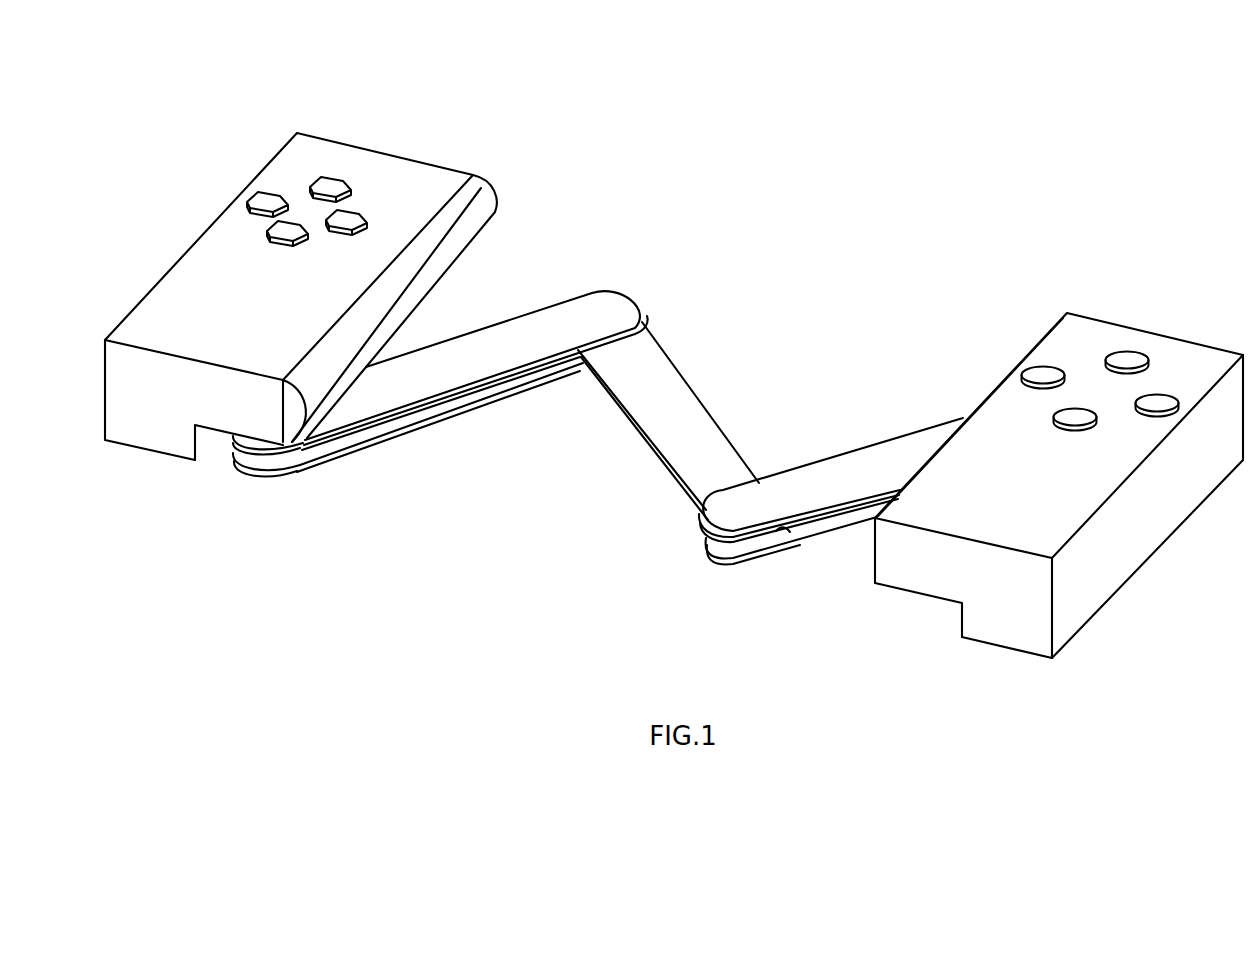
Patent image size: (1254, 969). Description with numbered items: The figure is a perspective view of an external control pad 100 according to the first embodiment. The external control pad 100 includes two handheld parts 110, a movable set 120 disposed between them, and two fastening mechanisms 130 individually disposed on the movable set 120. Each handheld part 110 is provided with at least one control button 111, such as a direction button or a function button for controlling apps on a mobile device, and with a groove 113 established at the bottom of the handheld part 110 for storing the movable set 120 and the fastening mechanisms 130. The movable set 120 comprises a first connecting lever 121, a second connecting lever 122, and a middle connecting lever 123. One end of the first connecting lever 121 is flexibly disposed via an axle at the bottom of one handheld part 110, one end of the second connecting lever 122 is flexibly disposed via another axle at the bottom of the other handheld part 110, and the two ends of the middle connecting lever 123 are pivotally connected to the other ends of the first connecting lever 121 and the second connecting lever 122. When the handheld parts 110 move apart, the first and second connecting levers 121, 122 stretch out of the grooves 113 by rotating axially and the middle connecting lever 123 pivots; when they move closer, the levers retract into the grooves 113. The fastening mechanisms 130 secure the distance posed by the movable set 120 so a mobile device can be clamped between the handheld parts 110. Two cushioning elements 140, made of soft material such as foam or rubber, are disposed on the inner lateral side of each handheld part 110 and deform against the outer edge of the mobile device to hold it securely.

The external control pad 100 is at (84, 56).
The handheld part 110 is at (163, 298).
The control button 111 is at (327, 187).
The groove 113 is at (220, 450).
The movable set 120 is at (598, 375).
The first connecting lever 121 is at (511, 326).
The second connecting lever 122 is at (831, 452).
The middle connecting lever 123 is at (680, 393).
The fastening mechanism 130 is at (390, 428).
The cushioning element 140 is at (480, 197).